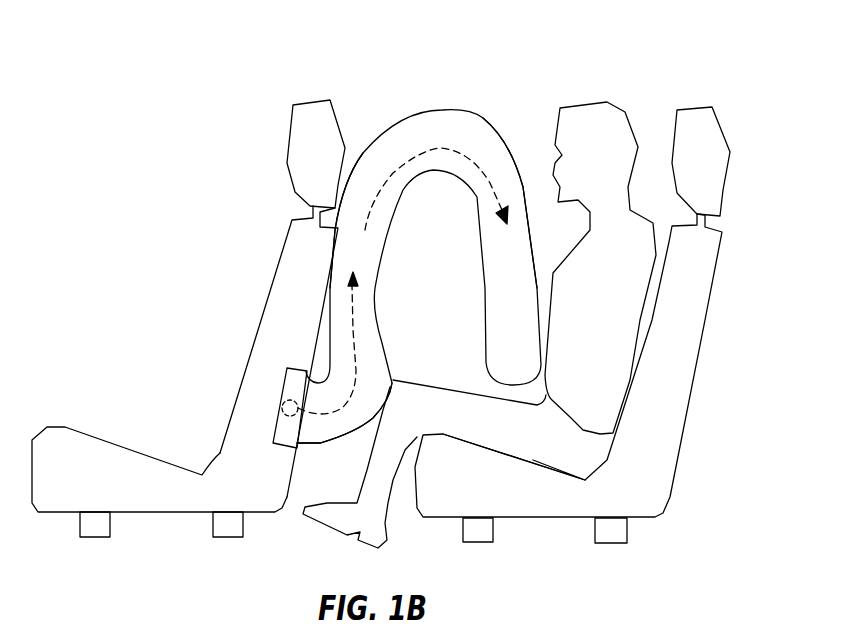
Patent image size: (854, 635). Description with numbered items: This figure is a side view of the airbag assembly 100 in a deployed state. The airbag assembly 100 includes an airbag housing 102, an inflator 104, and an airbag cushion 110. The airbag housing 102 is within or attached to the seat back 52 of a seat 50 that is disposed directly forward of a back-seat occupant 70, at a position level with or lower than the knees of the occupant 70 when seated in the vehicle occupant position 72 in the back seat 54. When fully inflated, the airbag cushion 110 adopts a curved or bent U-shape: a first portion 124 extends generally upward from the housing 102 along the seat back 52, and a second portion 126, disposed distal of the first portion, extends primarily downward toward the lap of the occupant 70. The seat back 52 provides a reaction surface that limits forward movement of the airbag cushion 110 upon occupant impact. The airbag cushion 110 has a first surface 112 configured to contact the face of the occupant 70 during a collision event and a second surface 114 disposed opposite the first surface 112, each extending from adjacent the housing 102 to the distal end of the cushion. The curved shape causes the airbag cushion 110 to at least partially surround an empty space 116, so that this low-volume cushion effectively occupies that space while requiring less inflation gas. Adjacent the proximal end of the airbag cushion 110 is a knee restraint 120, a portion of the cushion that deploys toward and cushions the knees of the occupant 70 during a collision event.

The seat 50 is at (142, 398).
The seat back 52 is at (312, 309).
The back seat 54 is at (738, 338).
The occupant 70 is at (627, 269).
The vehicle occupant position 72 is at (645, 110).
The airbag assembly 100 is at (437, 242).
The airbag housing 102 is at (274, 380).
The inflator 104 is at (283, 406).
The airbag cushion 110 is at (412, 107).
The first surface 112 is at (483, 118).
The second surface 114 is at (477, 210).
The empty space 116 is at (441, 291).
The knee restraint 120 is at (396, 387).
The first portion 124 is at (360, 160).
The second portion 126 is at (525, 172).